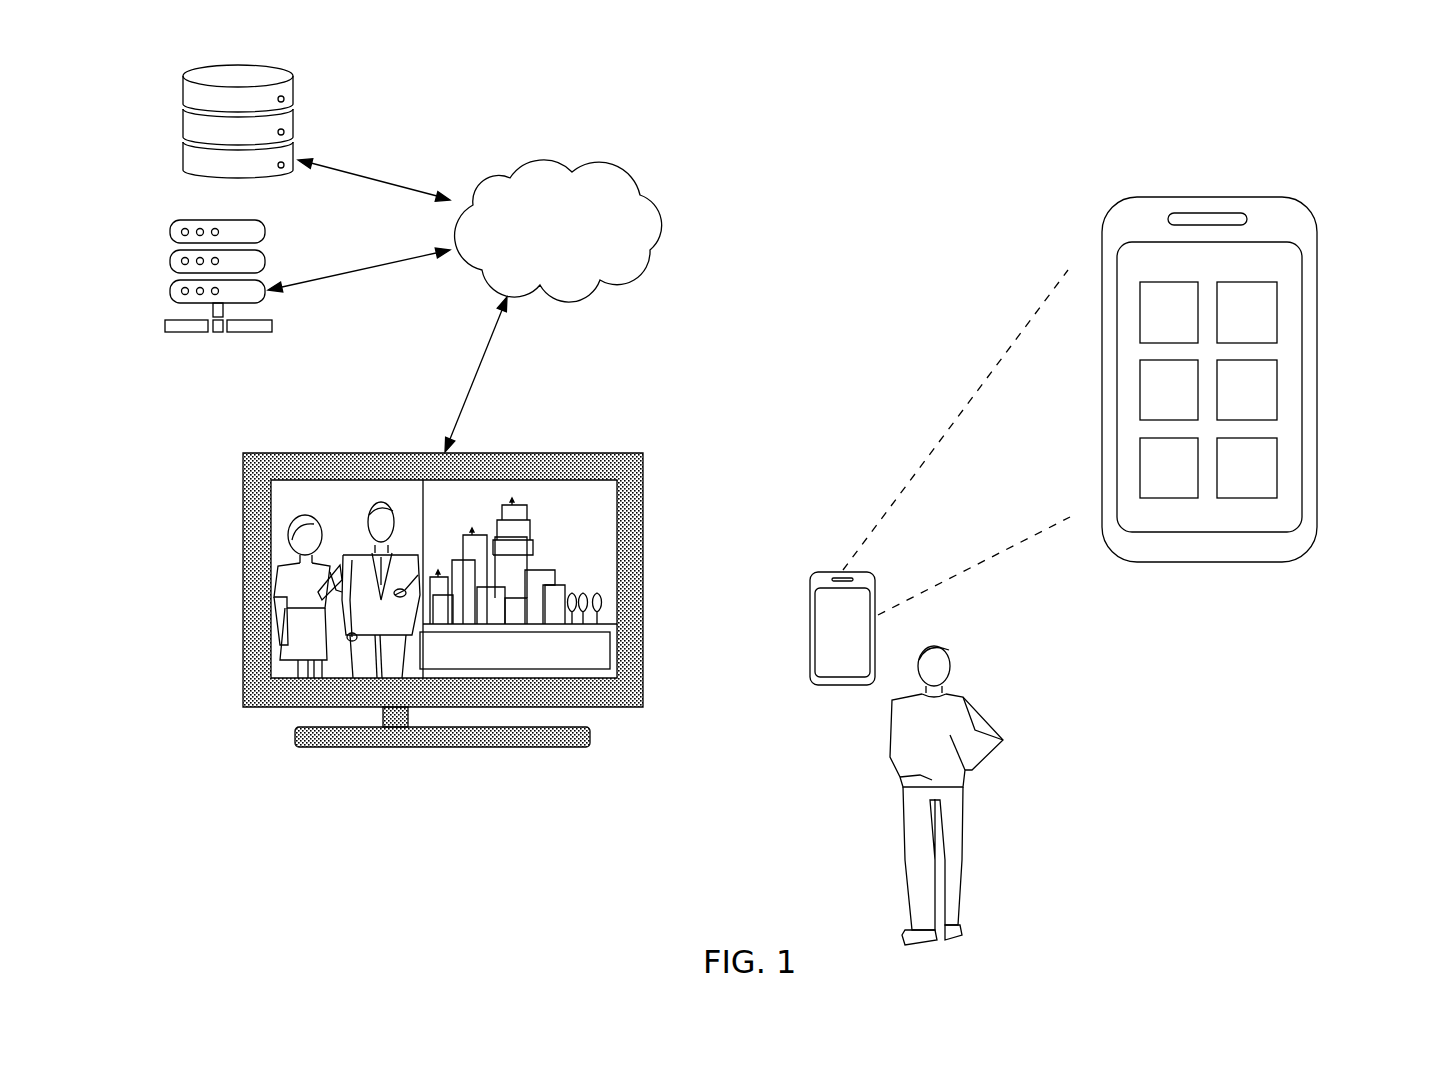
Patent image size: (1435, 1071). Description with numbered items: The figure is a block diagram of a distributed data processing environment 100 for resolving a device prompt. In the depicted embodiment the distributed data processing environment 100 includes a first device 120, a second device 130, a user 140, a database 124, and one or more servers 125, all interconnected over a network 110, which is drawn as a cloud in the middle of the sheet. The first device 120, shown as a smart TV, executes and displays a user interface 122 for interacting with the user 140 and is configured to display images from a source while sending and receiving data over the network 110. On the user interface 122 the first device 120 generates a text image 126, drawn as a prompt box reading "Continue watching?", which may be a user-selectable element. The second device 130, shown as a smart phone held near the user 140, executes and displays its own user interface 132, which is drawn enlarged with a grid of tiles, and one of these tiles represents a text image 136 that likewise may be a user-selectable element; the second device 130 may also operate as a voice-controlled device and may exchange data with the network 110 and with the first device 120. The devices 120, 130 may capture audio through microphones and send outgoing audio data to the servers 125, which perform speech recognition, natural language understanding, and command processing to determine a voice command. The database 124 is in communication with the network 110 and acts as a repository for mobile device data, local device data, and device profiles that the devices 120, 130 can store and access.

The distributed data processing environment 100 is at (1200, 95).
The network 110 is at (538, 263).
The first device 120 is at (645, 472).
The user interface 122 is at (590, 521).
The database 124 is at (295, 90).
The server 125 is at (266, 232).
The text image 126 is at (607, 660).
The second device 130 is at (823, 686).
The user interface 132 is at (1265, 277).
The text image 136 is at (1260, 315).
The user 140 is at (950, 655).